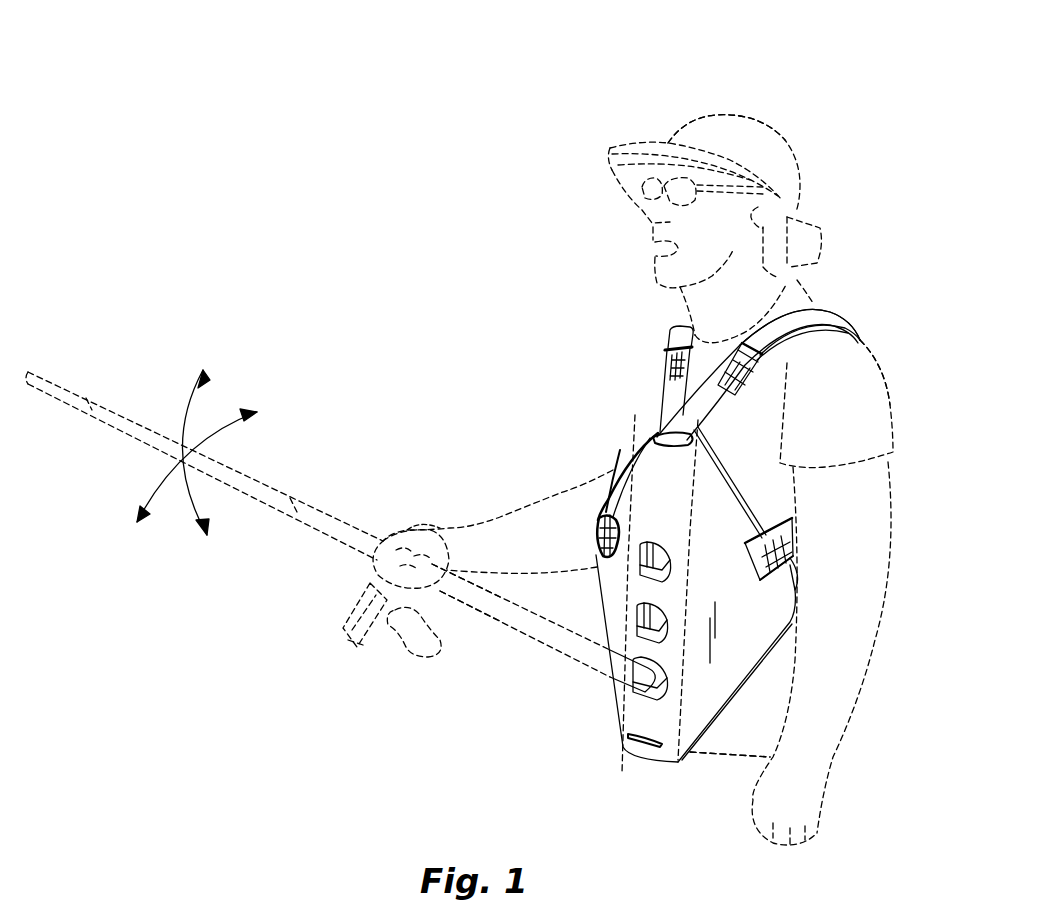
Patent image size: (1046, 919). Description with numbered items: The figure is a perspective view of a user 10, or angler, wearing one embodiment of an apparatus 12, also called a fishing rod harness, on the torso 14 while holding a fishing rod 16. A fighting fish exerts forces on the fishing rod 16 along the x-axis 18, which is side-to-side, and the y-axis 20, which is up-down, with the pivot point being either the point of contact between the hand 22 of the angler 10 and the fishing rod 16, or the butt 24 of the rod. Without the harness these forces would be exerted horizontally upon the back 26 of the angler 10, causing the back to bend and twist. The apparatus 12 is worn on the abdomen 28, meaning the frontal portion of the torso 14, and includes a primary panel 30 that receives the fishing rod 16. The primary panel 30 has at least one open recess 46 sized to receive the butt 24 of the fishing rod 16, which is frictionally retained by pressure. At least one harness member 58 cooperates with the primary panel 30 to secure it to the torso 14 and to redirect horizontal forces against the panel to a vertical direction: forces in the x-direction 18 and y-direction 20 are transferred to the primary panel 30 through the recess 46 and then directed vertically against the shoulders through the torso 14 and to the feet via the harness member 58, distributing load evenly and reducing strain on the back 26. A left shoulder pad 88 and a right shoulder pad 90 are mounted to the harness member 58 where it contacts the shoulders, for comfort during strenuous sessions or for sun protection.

The user 10 is at (763, 90).
The apparatus 12 is at (585, 434).
The torso 14 is at (737, 733).
The fishing rod 16 is at (515, 628).
The x-axis 18 is at (185, 398).
The y-axis 20 is at (153, 482).
The hand 22 is at (427, 528).
The butt 24 is at (628, 708).
The back 26 is at (870, 343).
The abdomen 28 is at (754, 424).
The primary panel 30 is at (680, 492).
The open recess 46 is at (637, 620).
The harness member 58 is at (665, 380).
The left shoulder pad 88 is at (832, 316).
The right shoulder pad 90 is at (670, 330).